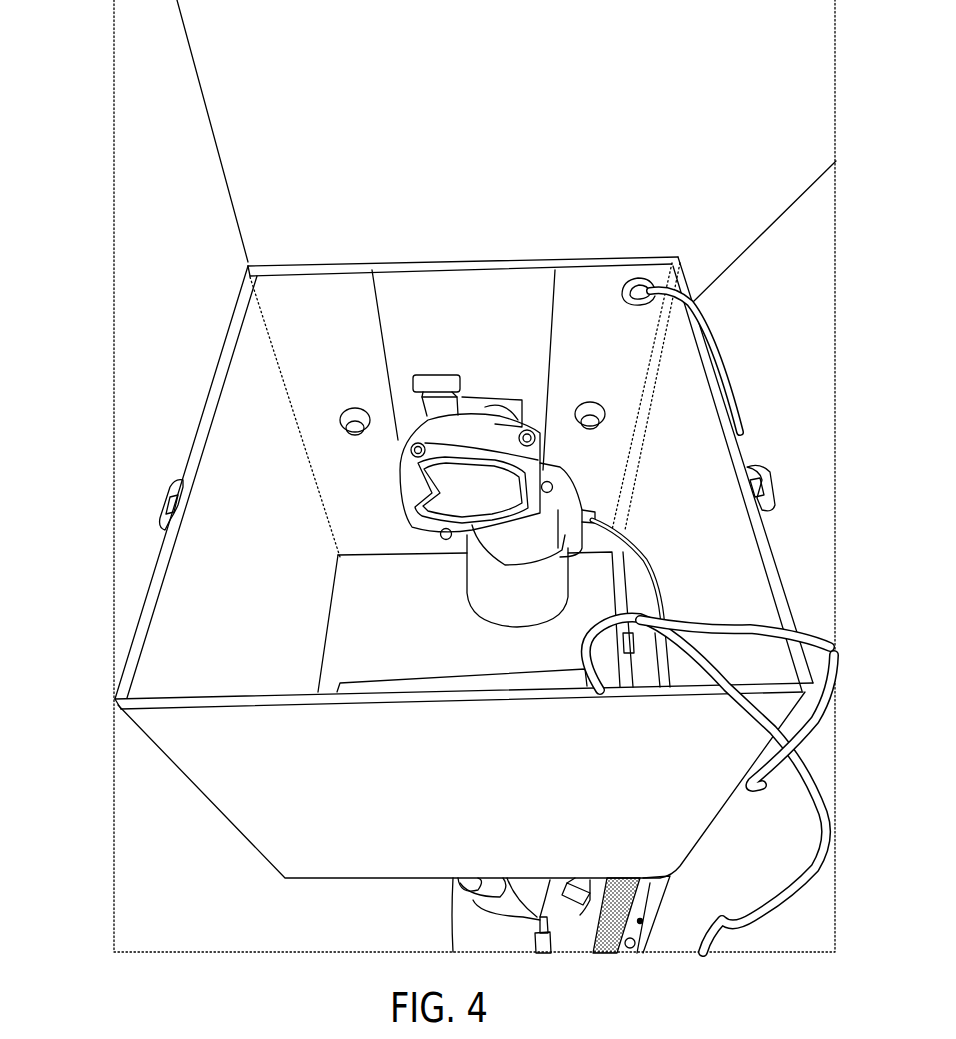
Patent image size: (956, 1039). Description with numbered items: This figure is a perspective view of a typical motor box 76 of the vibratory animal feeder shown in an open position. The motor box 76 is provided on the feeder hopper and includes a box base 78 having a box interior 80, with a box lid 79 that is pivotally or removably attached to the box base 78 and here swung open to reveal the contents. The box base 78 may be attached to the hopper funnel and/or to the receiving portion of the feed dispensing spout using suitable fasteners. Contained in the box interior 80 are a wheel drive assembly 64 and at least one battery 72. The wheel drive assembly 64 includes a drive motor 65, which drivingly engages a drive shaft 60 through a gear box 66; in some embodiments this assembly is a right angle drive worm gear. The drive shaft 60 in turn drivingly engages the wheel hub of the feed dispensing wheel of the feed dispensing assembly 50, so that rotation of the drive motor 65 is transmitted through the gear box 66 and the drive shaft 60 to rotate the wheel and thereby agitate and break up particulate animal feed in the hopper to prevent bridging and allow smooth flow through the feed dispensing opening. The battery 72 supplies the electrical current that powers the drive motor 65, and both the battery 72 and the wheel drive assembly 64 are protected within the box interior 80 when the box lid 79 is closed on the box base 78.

The feed dispensing assembly 50 is at (188, 381).
The drive shaft 60 is at (467, 408).
The wheel drive assembly 64 is at (394, 495).
The drive motor 65 is at (485, 582).
The gear box 66 is at (397, 500).
The battery 72 is at (413, 683).
The motor box 76 is at (175, 769).
The box base 78 is at (138, 628).
The box lid 79 is at (233, 195).
The box interior 80 is at (272, 406).